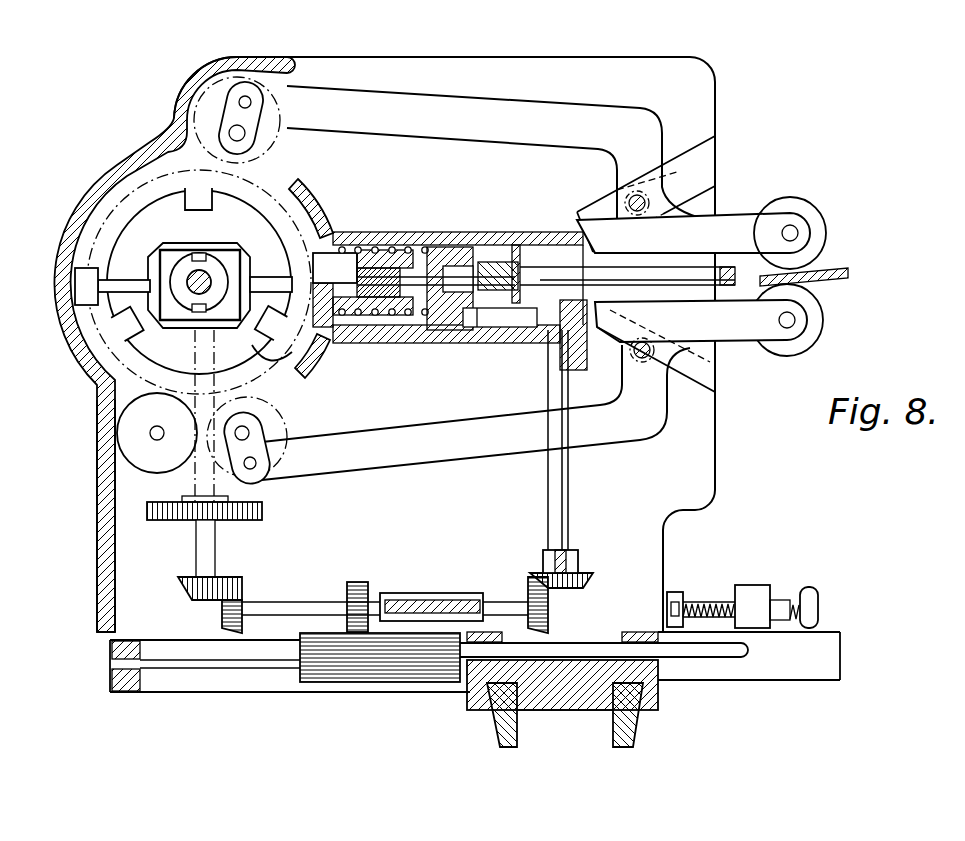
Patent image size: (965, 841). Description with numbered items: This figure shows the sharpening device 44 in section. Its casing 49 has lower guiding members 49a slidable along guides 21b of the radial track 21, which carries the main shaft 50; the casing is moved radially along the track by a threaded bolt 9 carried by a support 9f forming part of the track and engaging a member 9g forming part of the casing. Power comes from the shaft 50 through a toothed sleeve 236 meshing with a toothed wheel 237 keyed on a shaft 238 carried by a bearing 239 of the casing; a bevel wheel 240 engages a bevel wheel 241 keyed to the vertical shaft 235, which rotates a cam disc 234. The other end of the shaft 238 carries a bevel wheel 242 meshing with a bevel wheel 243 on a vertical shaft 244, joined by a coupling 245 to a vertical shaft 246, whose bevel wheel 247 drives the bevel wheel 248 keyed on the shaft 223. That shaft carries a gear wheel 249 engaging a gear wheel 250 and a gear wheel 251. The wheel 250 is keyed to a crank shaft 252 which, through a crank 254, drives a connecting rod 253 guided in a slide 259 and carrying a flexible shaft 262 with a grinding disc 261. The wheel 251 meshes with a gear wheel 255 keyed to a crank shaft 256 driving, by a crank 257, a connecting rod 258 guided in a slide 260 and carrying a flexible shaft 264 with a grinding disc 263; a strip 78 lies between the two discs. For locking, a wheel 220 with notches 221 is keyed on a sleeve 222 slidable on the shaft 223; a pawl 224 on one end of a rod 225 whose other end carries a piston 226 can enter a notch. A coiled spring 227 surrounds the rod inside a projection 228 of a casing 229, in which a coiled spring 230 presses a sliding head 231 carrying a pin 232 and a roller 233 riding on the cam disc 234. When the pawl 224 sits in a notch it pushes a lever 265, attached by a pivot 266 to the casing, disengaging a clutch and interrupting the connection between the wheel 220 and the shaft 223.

The sharpening device 44 is at (157, 143).
The crank shaft 252 is at (222, 103).
The casing 49 is at (105, 478).
The crank 254 is at (262, 108).
The gear wheel 250 is at (272, 133).
The gear wheel 249 is at (257, 187).
The wheel 220 is at (253, 213).
The notches 221 is at (270, 362).
The bevel wheel 247 is at (173, 305).
The bevel wheel 248 is at (233, 305).
The shaft 223 is at (205, 298).
The sleeve 222 is at (190, 288).
The pivot 266 is at (78, 268).
The rod 225 is at (447, 240).
The casing 229 is at (392, 330).
The lever 265 is at (333, 262).
The pawl 224 is at (360, 252).
The coiled spring 230 is at (343, 318).
The projection 228 is at (380, 248).
The sliding head 231 is at (432, 330).
The coiled spring 227 is at (415, 276).
The piston 226 is at (500, 262).
The pin 232 is at (540, 274).
The roller 233 is at (477, 330).
The cam disc 234 is at (505, 320).
The connecting rod 253 is at (575, 108).
The slide 259 is at (703, 147).
The flexible shaft 262 is at (800, 234).
The grinding disc 261 is at (812, 208).
The strip 78 is at (850, 272).
The grinding disc 263 is at (822, 320).
The slide 260 is at (718, 403).
The flexible shaft 264 is at (797, 325).
The connecting rod 258 is at (410, 455).
The gear wheel 255 is at (290, 436).
The crank shaft 256 is at (250, 432).
The crank 257 is at (272, 462).
The gear wheel 251 is at (118, 438).
The vertical shaft 246 is at (200, 472).
The coupling 245 is at (265, 510).
The vertical shaft 244 is at (200, 553).
The bevel wheel 243 is at (233, 578).
The bevel wheel 242 is at (243, 596).
The shaft 238 is at (488, 602).
The toothed wheel 237 is at (370, 598).
The bearing 239 is at (428, 596).
The bevel wheel 240 is at (560, 600).
The bevel wheel 241 is at (585, 572).
The vertical shaft 235 is at (548, 500).
The member 9g is at (676, 594).
The threaded bolt 9 is at (713, 600).
The support 9f is at (763, 588).
The guides 21b is at (158, 643).
The lower guiding members 49a is at (110, 652).
The shaft 50 is at (262, 662).
The toothed sleeve 236 is at (435, 688).
The radial track 21 is at (382, 690).